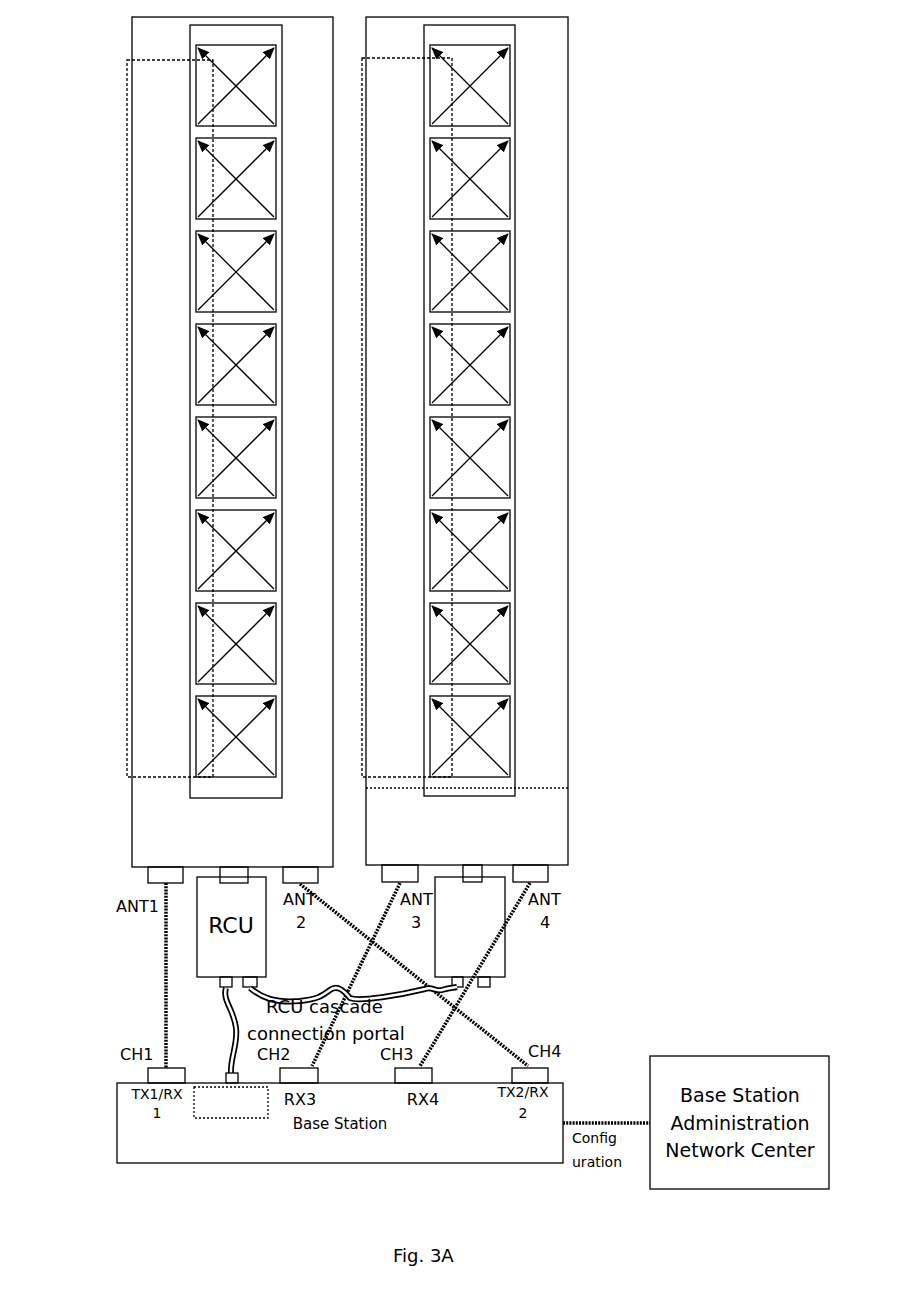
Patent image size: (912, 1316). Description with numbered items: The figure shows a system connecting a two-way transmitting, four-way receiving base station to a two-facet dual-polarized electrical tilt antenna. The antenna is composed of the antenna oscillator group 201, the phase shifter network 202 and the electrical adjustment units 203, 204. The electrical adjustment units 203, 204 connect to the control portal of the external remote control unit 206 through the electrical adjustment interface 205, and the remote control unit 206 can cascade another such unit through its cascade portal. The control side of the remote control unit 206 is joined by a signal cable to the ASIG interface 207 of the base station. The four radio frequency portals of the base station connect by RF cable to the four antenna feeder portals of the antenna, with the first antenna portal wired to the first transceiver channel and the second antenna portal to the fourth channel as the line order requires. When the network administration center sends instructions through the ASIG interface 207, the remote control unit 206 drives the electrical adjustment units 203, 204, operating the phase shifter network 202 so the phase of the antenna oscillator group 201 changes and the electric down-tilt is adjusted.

The antenna oscillator group 201 is at (520, 285).
The phase shifter network 202 is at (170, 418).
The electrical adjustment unit 203 is at (171, 450).
The electrical adjustment unit 204 is at (602, 449).
The electrical adjustment interface 205 is at (220, 881).
The remote control unit (RCU) 206 is at (518, 958).
The ASIG interface 207 is at (244, 1122).